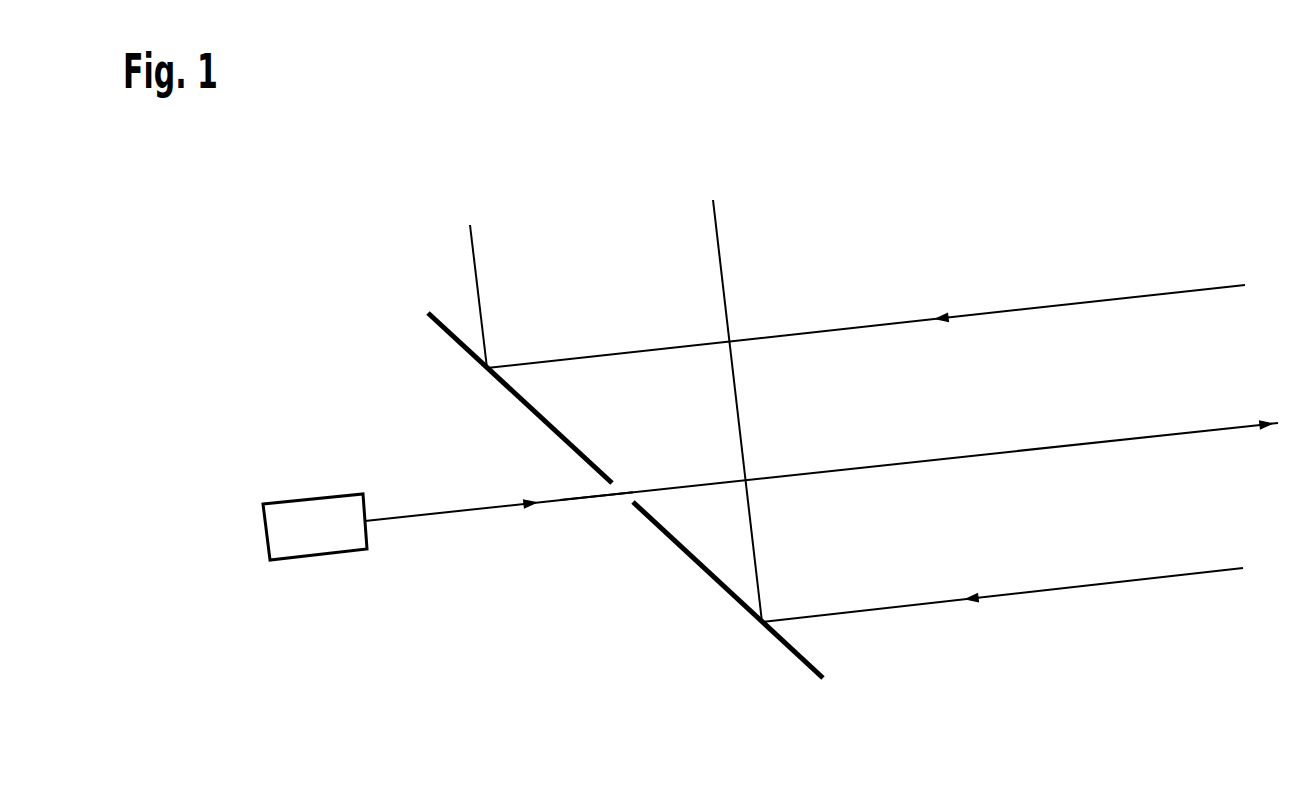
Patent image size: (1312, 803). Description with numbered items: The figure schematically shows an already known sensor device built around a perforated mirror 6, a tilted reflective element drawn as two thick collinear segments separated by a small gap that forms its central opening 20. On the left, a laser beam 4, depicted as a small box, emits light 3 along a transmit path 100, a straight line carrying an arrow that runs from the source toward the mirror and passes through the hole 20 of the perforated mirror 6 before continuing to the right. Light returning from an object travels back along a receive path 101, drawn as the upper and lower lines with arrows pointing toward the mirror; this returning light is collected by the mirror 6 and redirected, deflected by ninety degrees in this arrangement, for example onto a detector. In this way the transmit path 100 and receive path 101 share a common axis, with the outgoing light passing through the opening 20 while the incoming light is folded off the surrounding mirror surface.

The laser beam 4 is at (308, 497).
The transmit path 100 is at (450, 515).
The light 3 is at (590, 497).
The central opening 20 is at (626, 485).
The perforated mirror 6 is at (800, 660).
The receive path 101 is at (1037, 307).